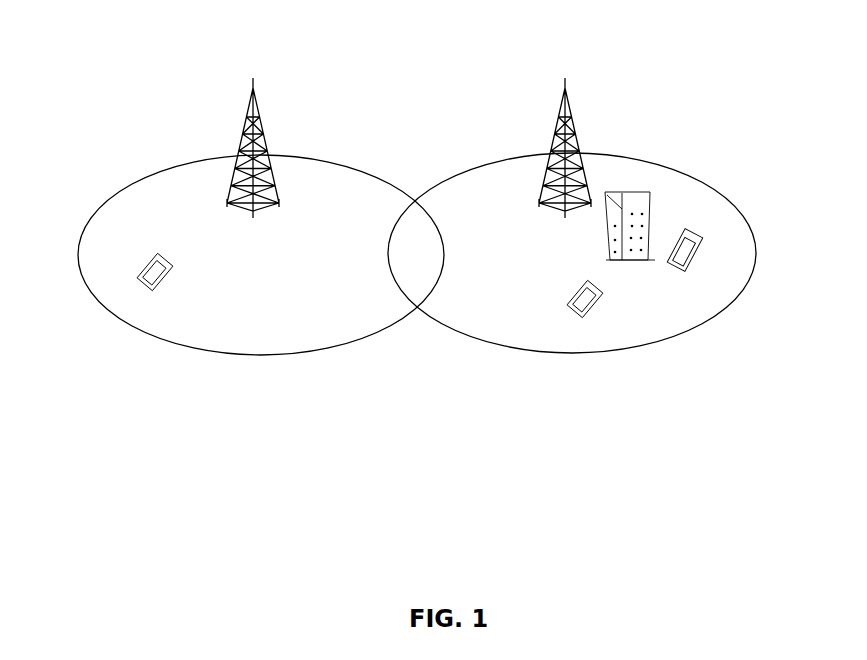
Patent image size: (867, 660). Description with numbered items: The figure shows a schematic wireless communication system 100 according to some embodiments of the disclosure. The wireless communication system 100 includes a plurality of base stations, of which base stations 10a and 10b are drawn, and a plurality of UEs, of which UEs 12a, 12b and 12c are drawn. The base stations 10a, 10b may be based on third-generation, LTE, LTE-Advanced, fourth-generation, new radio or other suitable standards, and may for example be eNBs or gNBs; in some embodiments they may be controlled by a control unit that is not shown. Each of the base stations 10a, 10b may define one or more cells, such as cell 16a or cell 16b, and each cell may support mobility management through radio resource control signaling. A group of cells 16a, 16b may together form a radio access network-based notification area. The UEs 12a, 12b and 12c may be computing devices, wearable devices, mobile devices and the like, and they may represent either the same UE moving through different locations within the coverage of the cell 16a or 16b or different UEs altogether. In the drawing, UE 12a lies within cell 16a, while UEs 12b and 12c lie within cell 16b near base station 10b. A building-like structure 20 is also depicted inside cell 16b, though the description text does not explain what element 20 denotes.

The wireless communication system 100 is at (782, 101).
The base station 10a is at (263, 95).
The base station 10b is at (600, 95).
The UE 12a is at (132, 252).
The UE 12b is at (710, 273).
The UE 12c is at (604, 319).
The cell 16a is at (261, 255).
The cell 16b is at (572, 253).
The building 20 is at (662, 199).